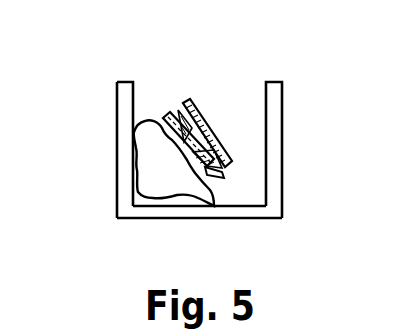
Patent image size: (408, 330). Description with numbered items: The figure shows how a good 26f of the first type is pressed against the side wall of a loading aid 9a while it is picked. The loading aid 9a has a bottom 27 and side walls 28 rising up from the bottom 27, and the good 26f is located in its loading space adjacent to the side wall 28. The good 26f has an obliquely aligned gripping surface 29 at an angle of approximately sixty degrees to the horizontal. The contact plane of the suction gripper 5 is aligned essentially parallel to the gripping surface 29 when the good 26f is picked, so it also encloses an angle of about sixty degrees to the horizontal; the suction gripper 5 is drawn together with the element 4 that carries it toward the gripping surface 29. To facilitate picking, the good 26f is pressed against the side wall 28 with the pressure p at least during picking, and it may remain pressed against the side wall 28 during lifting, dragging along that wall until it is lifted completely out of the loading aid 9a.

The tongue 4 is at (186, 104).
The suction gripper 5 is at (170, 113).
The loading aid 9a is at (283, 132).
The good 26f is at (150, 162).
The bottom 27 is at (165, 213).
The side wall 28 is at (124, 121).
The gripping surface 29 is at (218, 178).
The pressure p is at (215, 122).